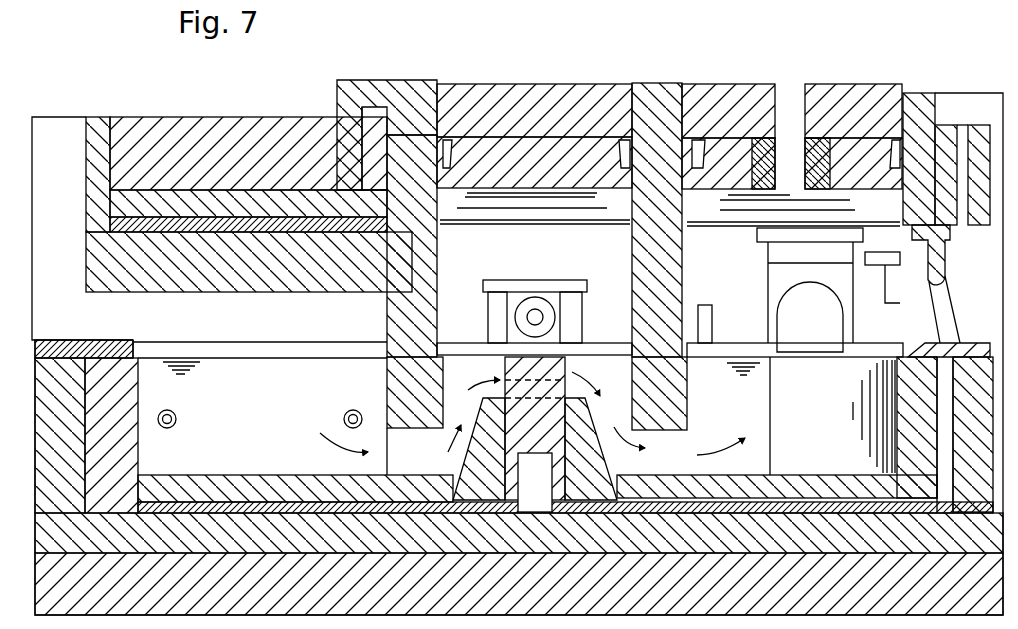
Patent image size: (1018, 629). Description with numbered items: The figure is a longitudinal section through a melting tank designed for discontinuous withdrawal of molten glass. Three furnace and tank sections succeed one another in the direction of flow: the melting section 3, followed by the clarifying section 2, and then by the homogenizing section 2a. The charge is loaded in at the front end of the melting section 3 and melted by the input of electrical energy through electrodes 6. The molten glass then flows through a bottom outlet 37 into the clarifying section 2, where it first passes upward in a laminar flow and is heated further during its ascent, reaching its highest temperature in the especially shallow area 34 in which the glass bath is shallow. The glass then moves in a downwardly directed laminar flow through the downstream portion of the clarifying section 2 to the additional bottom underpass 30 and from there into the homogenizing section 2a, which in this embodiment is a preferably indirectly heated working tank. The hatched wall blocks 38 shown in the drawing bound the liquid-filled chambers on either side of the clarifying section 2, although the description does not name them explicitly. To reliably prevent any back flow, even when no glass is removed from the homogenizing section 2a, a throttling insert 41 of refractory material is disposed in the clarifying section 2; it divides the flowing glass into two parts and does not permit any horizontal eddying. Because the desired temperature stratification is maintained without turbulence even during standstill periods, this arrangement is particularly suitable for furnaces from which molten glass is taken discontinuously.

The clarifying section 2 is at (620, 374).
The homogenizing section 2a is at (843, 413).
The melting section 3 is at (295, 389).
The electrodes 6 is at (177, 419).
The bottom underpass 30 is at (687, 465).
The shallow area 34 is at (475, 447).
The bottom outlet 37 is at (438, 459).
The partition block 38 is at (387, 389).
The throttling insert 41 is at (500, 367).